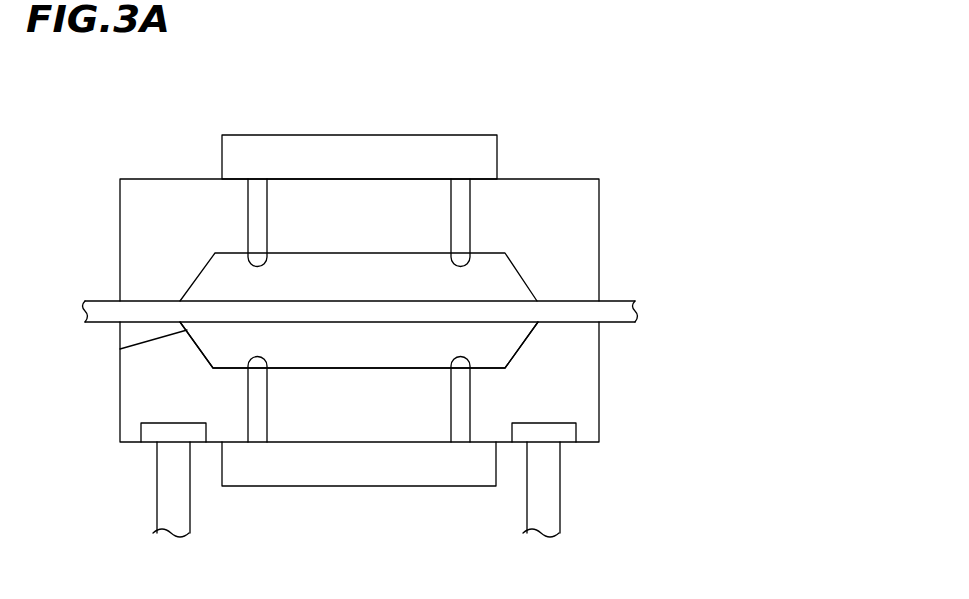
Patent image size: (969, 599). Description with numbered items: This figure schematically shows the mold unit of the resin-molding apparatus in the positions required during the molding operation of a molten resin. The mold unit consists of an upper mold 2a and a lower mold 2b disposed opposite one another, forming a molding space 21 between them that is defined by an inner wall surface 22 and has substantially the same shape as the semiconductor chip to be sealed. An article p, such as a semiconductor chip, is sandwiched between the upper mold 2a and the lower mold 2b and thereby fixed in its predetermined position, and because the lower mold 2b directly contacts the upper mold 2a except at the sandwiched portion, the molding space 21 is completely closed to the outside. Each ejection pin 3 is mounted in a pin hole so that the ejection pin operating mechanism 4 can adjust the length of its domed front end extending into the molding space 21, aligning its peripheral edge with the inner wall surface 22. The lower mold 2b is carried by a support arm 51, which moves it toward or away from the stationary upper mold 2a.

The upper mold 2a is at (567, 188).
The lower mold 2b is at (578, 410).
The ejection pin 3 is at (260, 205).
The molding space 21 is at (313, 292).
The inner wall surface 22 is at (358, 367).
The article p is at (143, 308).
The ejection pin operating mechanism 4 is at (367, 472).
The support arm 51 is at (547, 494).